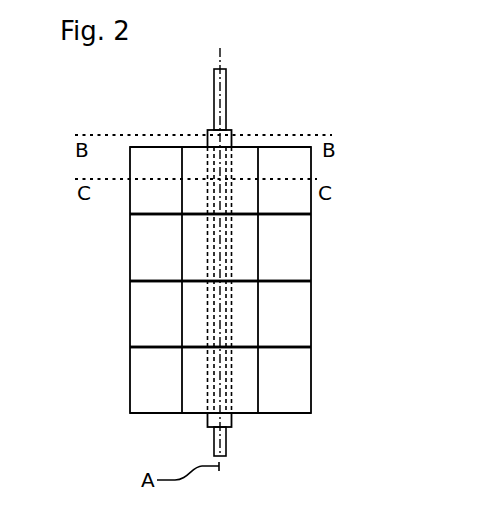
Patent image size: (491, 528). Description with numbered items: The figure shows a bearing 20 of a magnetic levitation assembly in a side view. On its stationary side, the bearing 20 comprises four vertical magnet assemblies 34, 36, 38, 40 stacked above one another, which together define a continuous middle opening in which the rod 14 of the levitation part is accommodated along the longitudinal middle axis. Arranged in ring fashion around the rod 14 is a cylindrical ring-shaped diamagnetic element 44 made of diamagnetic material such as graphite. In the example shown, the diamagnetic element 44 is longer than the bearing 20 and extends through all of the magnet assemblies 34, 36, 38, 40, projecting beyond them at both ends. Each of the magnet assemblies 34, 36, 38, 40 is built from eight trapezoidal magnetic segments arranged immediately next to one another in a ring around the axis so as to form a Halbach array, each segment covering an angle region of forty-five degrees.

The rod 14 is at (217, 83).
The bearing 20 is at (123, 112).
The magnet assembly 34 is at (130, 197).
The magnet assembly 36 is at (130, 247).
The magnet assembly 38 is at (130, 300).
The magnet assembly 40 is at (130, 364).
The diamagnetic element 44 is at (227, 420).